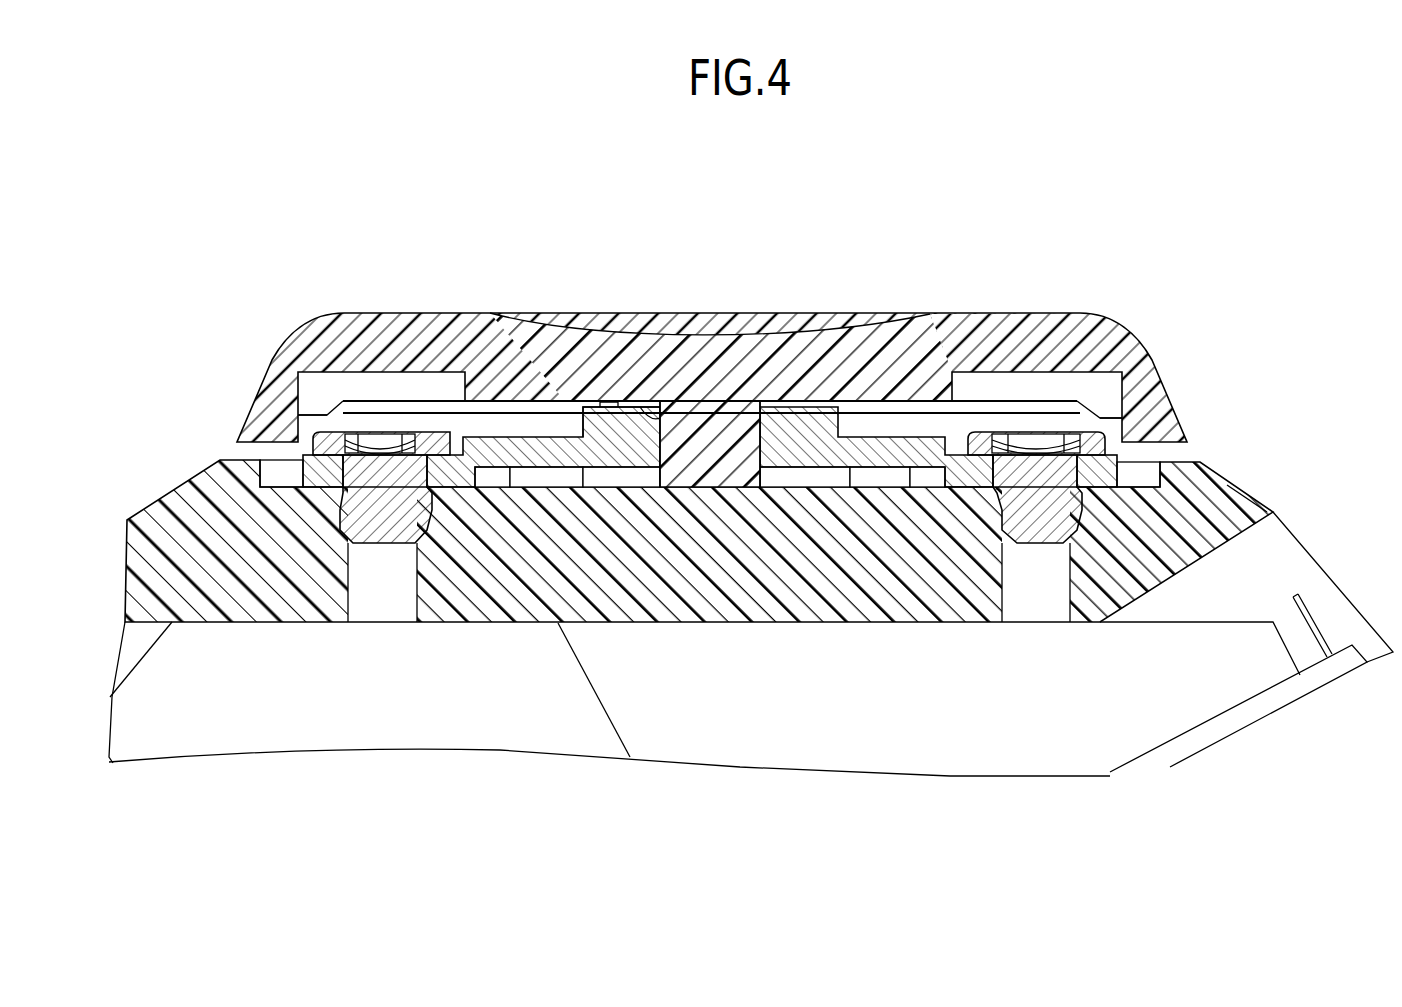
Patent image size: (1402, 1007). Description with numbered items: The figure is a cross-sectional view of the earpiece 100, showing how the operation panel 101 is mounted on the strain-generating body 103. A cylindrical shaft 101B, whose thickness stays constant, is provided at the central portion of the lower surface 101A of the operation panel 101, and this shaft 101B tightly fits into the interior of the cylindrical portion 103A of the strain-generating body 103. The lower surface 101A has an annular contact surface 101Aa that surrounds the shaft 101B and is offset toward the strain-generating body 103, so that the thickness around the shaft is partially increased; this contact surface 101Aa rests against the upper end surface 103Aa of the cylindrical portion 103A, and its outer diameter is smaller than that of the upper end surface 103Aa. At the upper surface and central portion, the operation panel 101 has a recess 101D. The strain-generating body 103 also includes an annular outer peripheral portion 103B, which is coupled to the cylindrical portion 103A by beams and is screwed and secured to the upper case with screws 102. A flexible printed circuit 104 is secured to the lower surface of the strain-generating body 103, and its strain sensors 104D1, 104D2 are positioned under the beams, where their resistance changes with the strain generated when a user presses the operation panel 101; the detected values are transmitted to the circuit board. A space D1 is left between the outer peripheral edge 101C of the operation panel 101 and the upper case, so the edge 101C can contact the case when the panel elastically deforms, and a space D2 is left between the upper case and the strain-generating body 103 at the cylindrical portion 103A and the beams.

The earpiece 100 is at (1283, 229).
The operation panel 101 is at (405, 313).
The lower surface 101A is at (933, 398).
The contact surface 101Aa is at (651, 414).
The shaft 101B is at (712, 432).
The outer peripheral edge 101C is at (312, 442).
The recess 101D is at (756, 316).
The screw 102 is at (330, 447).
The strain-generating body 103 is at (504, 450).
The cylindrical portion 103A is at (598, 427).
The upper end surface 103Aa is at (606, 391).
The outer peripheral portion 103B is at (315, 468).
The flexible printed circuit 104 is at (483, 490).
The strain sensor 104D1 is at (545, 480).
The strain sensor 104D2 is at (875, 480).
The space D1 is at (1165, 455).
The space D2 is at (932, 490).